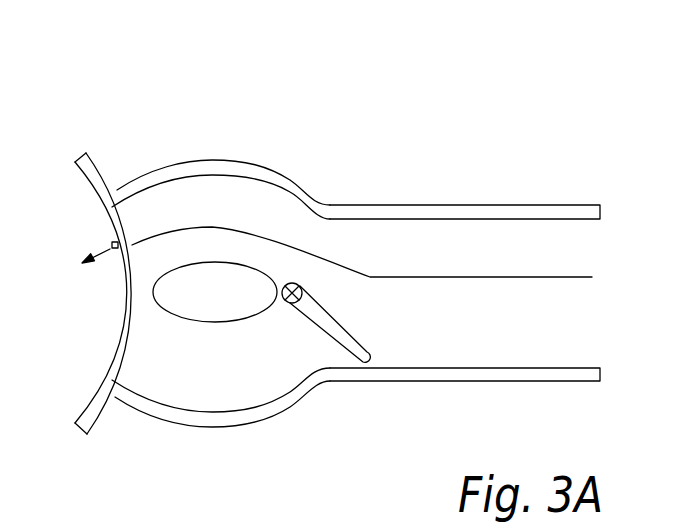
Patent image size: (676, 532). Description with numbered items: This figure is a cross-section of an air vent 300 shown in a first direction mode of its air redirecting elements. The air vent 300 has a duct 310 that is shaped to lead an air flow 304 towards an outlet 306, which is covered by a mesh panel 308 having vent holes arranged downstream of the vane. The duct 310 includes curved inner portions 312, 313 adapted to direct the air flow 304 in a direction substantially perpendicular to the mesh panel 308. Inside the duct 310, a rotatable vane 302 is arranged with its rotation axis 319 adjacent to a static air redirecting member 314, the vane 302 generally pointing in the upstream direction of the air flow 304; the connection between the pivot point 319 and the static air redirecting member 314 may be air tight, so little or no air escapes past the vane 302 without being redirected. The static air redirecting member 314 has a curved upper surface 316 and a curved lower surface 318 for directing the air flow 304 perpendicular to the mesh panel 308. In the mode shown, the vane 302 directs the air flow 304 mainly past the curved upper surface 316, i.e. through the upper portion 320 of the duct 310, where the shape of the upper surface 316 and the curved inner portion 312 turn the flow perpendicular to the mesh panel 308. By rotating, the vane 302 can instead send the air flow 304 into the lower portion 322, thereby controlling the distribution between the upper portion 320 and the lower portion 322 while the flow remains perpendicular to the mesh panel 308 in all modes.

The air vent 300 is at (116, 86).
The rotatable vane 302 is at (338, 329).
The air flow 304 is at (371, 272).
The outlet 306 is at (136, 294).
The mesh panel 308 is at (101, 229).
The duct 310 is at (373, 382).
The curved inner portion 312 is at (238, 185).
The curved inner portion 313 is at (246, 398).
The static air redirecting member 314 is at (200, 298).
The curved upper surface 316 is at (208, 247).
The curved lower surface 318 is at (206, 337).
The rotation axis 319 is at (296, 283).
The upper portion 320 is at (170, 210).
The lower portion 322 is at (162, 357).